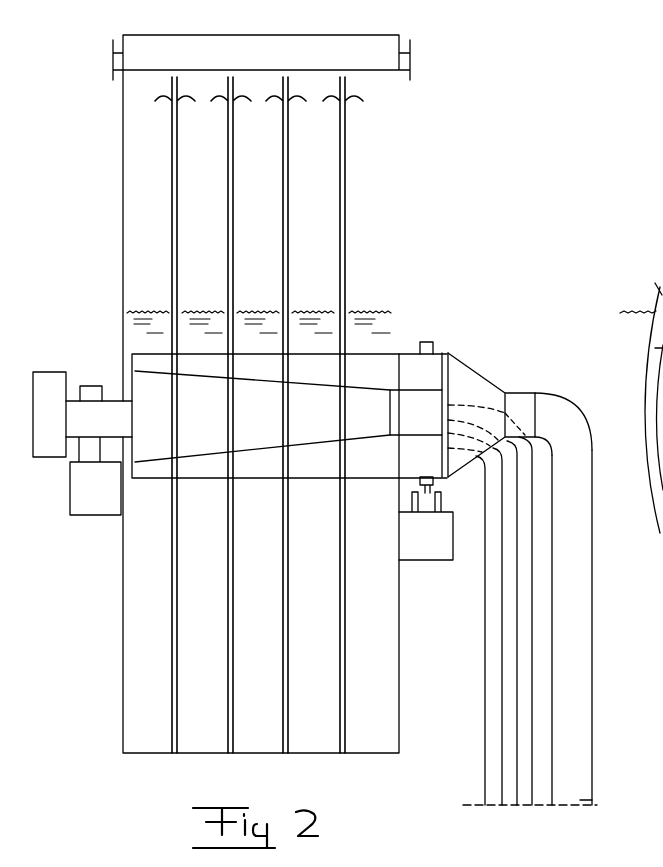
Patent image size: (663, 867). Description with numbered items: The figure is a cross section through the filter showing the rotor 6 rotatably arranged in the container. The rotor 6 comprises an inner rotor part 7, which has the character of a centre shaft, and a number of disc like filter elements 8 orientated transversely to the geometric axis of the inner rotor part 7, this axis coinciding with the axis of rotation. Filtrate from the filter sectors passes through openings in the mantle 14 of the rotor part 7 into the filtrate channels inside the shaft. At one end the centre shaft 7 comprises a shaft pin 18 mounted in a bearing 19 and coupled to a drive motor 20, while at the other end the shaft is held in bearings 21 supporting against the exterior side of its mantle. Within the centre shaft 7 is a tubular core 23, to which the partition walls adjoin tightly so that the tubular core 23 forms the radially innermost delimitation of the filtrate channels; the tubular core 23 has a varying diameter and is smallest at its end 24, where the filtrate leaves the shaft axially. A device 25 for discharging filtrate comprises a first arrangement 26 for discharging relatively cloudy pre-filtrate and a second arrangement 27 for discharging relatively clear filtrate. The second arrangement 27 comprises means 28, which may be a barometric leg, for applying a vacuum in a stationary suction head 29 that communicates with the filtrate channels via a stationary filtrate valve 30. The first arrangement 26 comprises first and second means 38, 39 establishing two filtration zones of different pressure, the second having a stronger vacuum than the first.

The rotor 6 is at (214, 490).
The inner rotor part 7 is at (385, 353).
The disc like filter element 8 is at (340, 205).
The mantle 14 is at (308, 478).
The shaft pin 18 is at (88, 425).
The bearing 19 is at (90, 393).
The drive motor 20 is at (49, 446).
The bearings 21 is at (420, 485).
The tubular core 23 is at (297, 383).
The end of the tubular core 24 is at (428, 388).
The device for discharging filtrate 25 is at (578, 395).
The first arrangement 26 is at (455, 753).
The second arrangement 27 is at (598, 685).
The means for applying a vacuum 28 is at (582, 758).
The suction head 29 is at (487, 392).
The filtrate valve 30 is at (447, 380).
The first means 38 is at (523, 715).
The second means 39 is at (493, 668).